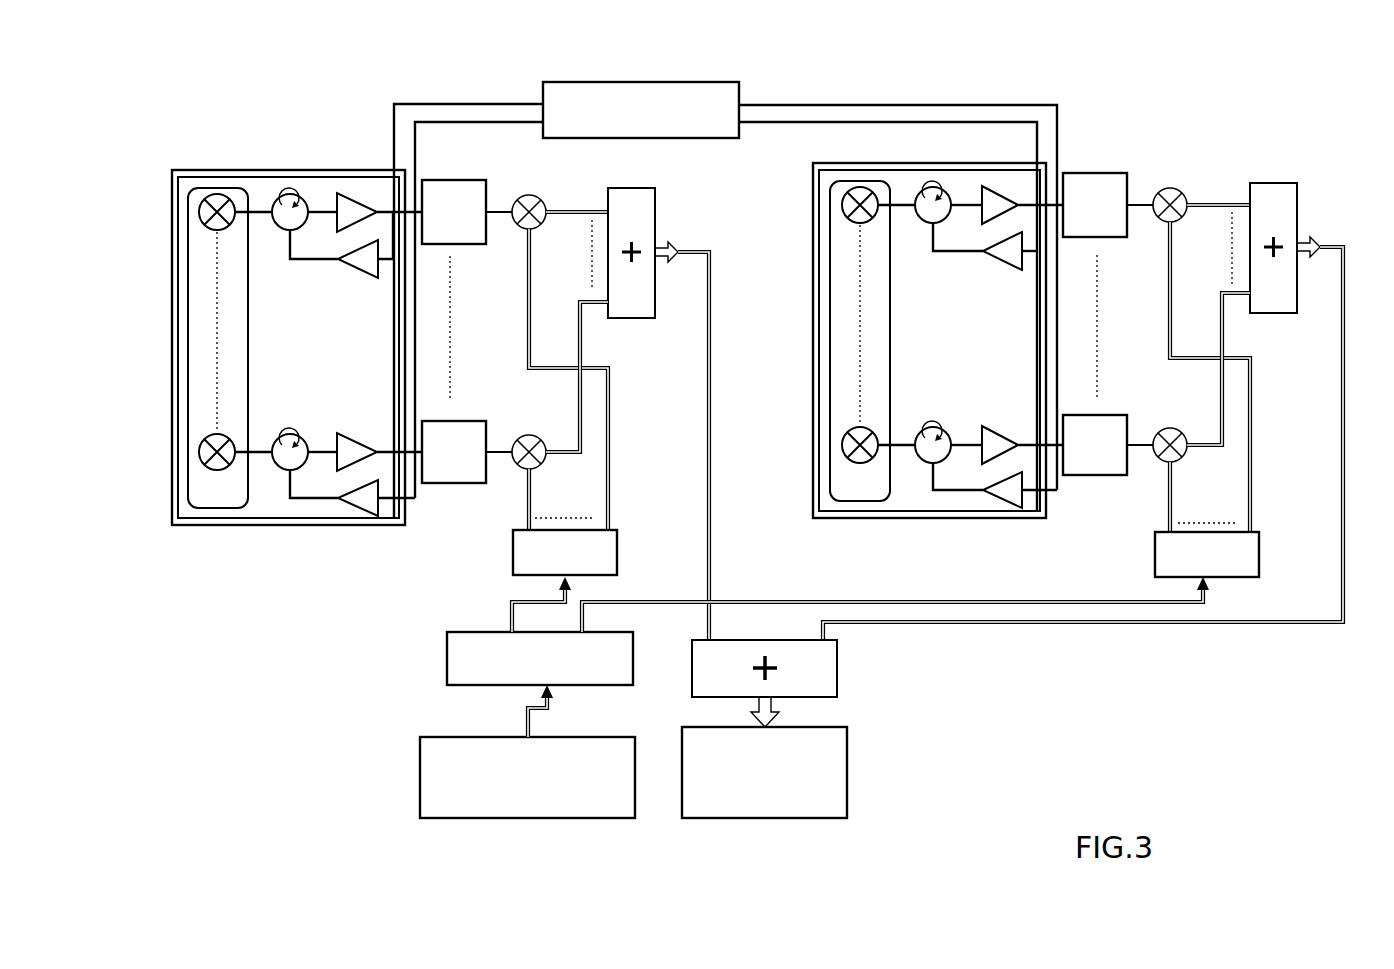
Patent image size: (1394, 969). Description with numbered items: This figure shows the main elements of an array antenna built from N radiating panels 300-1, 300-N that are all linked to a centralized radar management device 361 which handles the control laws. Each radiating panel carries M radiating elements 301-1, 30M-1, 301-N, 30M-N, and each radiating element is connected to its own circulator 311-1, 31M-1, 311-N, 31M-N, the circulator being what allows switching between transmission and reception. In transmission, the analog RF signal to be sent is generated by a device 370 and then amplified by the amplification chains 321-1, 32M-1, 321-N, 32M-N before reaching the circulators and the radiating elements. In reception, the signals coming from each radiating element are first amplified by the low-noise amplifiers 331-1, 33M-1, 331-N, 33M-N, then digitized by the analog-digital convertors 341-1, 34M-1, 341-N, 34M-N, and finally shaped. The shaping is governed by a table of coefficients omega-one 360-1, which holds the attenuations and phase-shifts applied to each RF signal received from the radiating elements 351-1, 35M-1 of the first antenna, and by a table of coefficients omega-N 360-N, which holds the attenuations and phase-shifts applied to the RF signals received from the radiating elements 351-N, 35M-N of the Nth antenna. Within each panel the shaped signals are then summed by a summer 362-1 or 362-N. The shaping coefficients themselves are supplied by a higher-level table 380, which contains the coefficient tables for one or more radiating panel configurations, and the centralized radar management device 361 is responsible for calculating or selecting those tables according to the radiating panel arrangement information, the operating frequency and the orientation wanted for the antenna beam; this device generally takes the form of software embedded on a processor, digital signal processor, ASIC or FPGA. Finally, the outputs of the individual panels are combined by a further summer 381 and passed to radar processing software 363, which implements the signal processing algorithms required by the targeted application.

The device 370 is at (630, 81).
The radiating panel 300-1 is at (172, 272).
The radiating element 301-1 is at (212, 192).
The circulator 311-1 is at (290, 194).
The low-noise amplifier 331-1 is at (352, 198).
The amplification chain 321-1 is at (354, 262).
The radiating element 30M-1 is at (200, 448).
The circulator 31M-1 is at (292, 430).
The low-noise amplifier 33M-1 is at (360, 437).
The amplification chain 32M-1 is at (377, 503).
The analog-digital convertor 341-1 is at (446, 178).
The radiating element 351-1 is at (540, 195).
The summer 362-1 is at (653, 203).
The analog-digital convertor 34M-1 is at (445, 483).
The radiating element 35M-1 is at (532, 436).
The table of coefficients ω1 360-1 is at (647, 528).
The radiating panel 300-N is at (813, 255).
The radiating element 301-N is at (855, 185).
The circulator 311-N is at (933, 186).
The low-noise amplifier 331-N is at (1005, 192).
The amplification chain 321-N is at (988, 254).
The radiating element 30M-N is at (845, 440).
The circulator 31M-N is at (933, 424).
The low-noise amplifier 33M-N is at (1005, 431).
The amplification chain 32M-N is at (1038, 508).
The analog-digital convertor 341-N is at (1090, 173).
The radiating element 351-N is at (1183, 190).
The summer 362-N is at (1296, 196).
The analog-digital convertor 34M-N is at (1087, 475).
The radiating element 35M-N is at (1158, 432).
The table of coefficients ωN 360-N is at (1287, 525).
The higher-level table 380 is at (447, 655).
The centralized radar management device 361 is at (420, 775).
The summer 381 is at (837, 677).
The radar processing software 363 is at (847, 778).